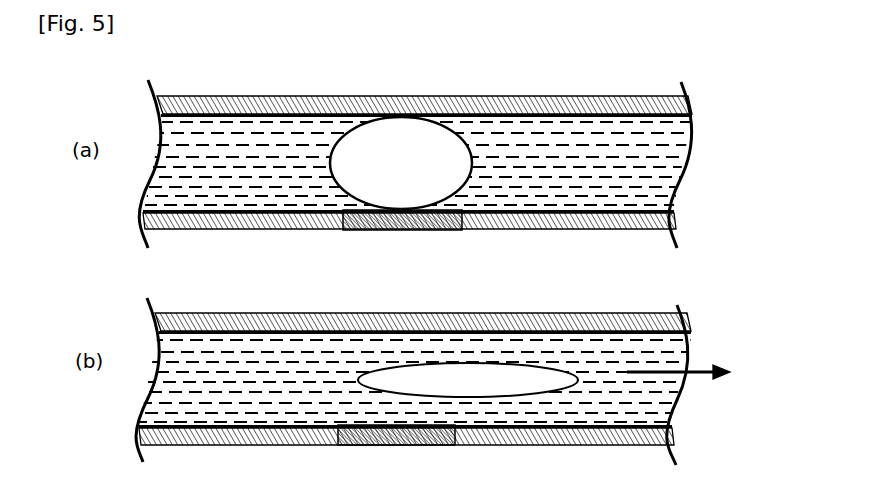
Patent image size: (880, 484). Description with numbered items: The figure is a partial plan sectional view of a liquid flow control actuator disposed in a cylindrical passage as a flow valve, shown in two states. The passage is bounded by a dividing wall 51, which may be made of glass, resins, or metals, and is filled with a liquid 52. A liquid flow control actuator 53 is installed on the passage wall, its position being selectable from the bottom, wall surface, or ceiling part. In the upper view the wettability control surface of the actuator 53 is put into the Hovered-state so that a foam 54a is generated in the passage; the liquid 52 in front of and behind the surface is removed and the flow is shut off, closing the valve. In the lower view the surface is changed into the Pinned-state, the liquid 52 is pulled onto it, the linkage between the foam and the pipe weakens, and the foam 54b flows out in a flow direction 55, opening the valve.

The dividing wall 51 is at (262, 100).
The liquid 52 is at (178, 163).
The liquid flow control actuator 53 is at (421, 222).
The foam 54a is at (402, 128).
The foam 54b is at (523, 390).
The flow direction 55 is at (697, 380).